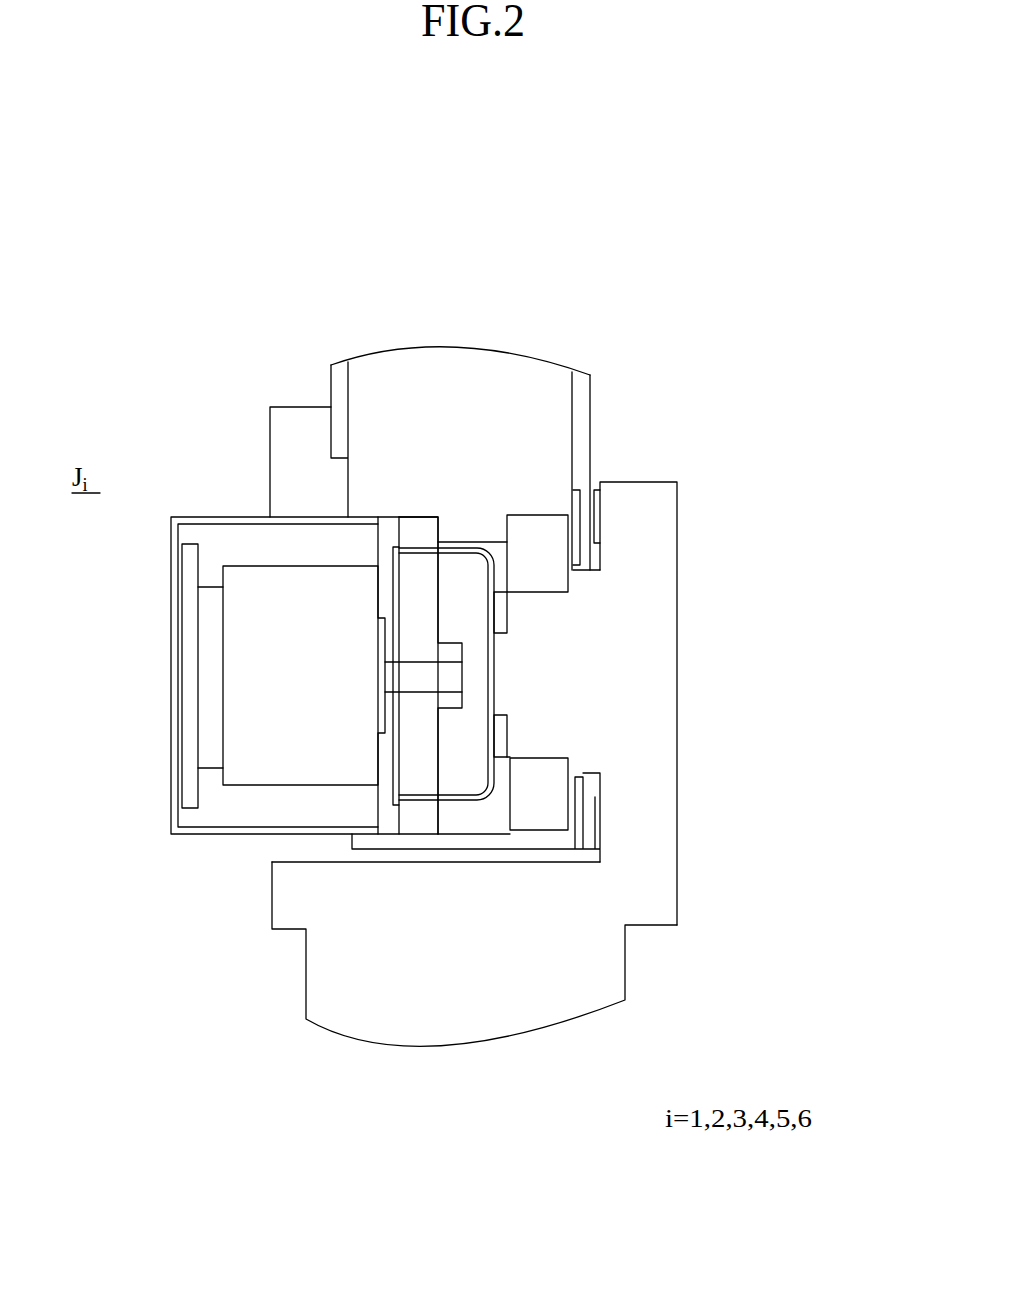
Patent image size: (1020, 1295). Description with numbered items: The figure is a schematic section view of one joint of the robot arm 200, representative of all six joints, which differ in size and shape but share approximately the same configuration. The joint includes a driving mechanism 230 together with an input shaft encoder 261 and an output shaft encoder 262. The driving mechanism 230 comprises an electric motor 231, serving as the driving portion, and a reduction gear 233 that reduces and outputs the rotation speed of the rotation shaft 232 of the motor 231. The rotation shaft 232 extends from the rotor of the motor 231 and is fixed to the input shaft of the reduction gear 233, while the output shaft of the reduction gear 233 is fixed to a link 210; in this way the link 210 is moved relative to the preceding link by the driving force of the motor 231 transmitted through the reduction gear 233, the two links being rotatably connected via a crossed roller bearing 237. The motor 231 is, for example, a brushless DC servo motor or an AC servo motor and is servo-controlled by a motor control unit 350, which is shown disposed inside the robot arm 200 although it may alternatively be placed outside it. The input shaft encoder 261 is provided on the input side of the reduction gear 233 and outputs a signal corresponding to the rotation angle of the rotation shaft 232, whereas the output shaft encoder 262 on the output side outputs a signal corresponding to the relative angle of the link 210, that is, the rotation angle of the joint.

The robot arm 200 is at (584, 281).
The link 210 is at (460, 1148).
The driving mechanism 230 is at (252, 548).
The electric motor 231 is at (247, 727).
The rotation shaft 232 is at (407, 680).
The reduction gear 233 is at (509, 549).
The crossed roller bearing 237 is at (545, 802).
The input shaft encoder 261 is at (213, 648).
The output shaft encoder 262 is at (616, 516).
The motor control unit 350 is at (190, 585).